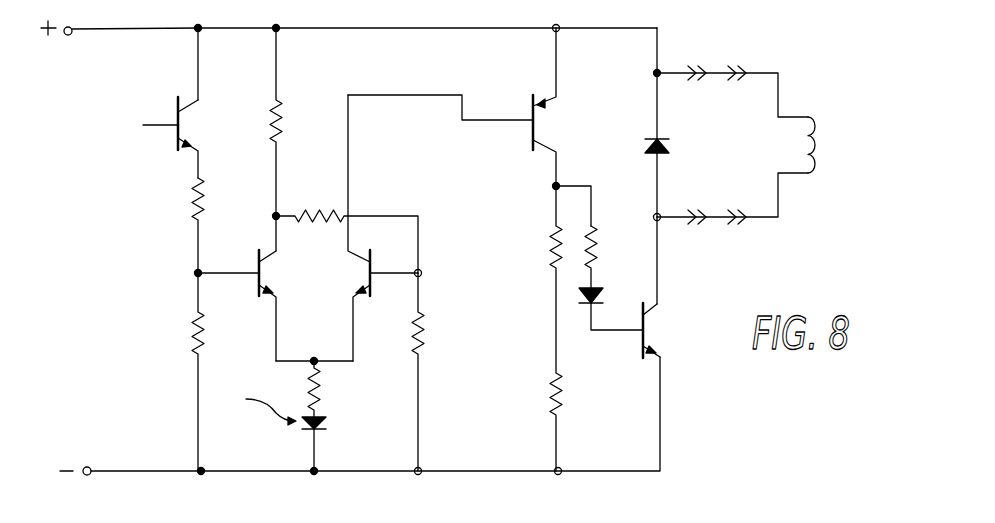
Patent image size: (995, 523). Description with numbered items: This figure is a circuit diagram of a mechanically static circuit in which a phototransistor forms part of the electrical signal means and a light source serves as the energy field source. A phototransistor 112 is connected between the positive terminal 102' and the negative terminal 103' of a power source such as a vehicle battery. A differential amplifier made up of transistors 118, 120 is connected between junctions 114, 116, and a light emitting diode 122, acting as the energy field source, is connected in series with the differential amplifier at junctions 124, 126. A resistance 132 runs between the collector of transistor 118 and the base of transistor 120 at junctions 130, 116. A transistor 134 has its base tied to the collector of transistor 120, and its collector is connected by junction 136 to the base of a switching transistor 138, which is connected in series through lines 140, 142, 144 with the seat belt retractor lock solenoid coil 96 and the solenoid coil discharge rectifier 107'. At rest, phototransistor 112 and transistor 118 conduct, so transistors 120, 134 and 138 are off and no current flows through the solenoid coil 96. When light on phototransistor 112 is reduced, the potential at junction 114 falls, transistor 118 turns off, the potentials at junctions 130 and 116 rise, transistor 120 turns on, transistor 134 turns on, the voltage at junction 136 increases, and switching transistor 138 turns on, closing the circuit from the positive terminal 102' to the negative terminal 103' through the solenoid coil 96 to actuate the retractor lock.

The positive terminal 102' is at (67, 51).
The negative terminal 103' is at (107, 453).
The phototransistor 112 is at (178, 110).
The junction 114 is at (198, 273).
The junction 116 is at (423, 273).
The transistor 118 is at (254, 286).
The transistor 120 is at (388, 250).
The light emitting diode 122 is at (328, 428).
The junction 124 is at (316, 356).
The junction 126 is at (310, 468).
The junction 130 is at (276, 216).
The resistance 132 is at (316, 212).
The transistor 134 is at (531, 113).
The junction 136 is at (559, 184).
The switching transistor 138 is at (642, 341).
The line 140 is at (385, 28).
The line 142 is at (664, 252).
The line 144 is at (480, 470).
The solenoid coil discharge rectifier 107' is at (688, 122).
The seat belt retractor lock solenoid coil 96 is at (816, 147).